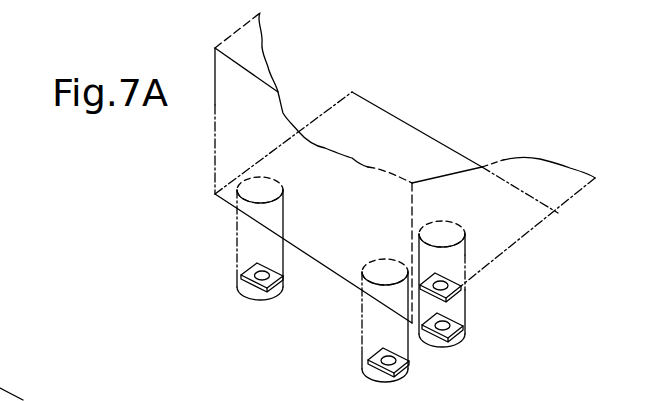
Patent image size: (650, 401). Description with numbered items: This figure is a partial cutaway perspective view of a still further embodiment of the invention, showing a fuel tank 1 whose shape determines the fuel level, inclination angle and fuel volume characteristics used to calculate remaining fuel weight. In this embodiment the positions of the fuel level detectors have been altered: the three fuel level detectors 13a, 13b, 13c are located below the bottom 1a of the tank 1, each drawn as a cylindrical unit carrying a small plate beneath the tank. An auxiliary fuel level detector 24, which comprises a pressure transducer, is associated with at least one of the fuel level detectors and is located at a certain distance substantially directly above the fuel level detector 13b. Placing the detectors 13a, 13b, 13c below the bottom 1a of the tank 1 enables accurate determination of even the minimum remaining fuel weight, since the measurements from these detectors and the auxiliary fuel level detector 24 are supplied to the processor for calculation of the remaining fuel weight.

The fuel tank 1 is at (215, 157).
The bottom of tank 1a is at (331, 270).
The fuel level detector 13a is at (370, 373).
The fuel level detector 13b is at (446, 342).
The fuel level detector 13c is at (240, 293).
The auxiliary fuel level detector 24 is at (462, 293).